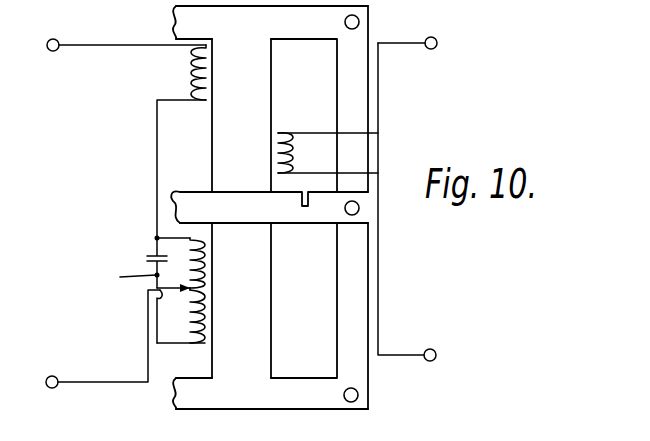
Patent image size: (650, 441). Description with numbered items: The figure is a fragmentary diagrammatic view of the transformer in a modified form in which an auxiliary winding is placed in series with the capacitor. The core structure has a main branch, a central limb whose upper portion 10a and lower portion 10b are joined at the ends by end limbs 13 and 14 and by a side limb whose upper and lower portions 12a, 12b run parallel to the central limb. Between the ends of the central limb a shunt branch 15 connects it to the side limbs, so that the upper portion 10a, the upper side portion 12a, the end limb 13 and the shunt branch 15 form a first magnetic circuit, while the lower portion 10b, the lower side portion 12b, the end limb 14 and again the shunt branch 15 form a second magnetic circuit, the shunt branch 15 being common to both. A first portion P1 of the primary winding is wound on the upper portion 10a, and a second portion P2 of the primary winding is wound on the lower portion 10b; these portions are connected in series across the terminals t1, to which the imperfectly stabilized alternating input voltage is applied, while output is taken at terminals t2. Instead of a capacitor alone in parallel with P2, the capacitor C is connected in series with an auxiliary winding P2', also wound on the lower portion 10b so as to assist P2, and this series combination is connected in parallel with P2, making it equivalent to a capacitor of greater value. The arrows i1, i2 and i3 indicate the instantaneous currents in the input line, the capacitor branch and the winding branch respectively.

The end limb 13 is at (270, 22).
The upper portion of central limb 10a is at (238, 120).
The upper portion of side limb 12a is at (356, 115).
The shunt branch 15 is at (269, 207).
The lower portion of central limb 10b is at (247, 368).
The lower portion of side limb 12b is at (357, 315).
The end limb 14 is at (270, 393).
The first portion of primary winding P1 is at (192, 70).
The second portion of primary winding P2 is at (198, 265).
The auxiliary winding P2' is at (203, 315).
The capacitor C is at (146, 263).
The terminals t1 is at (121, 200).
The output terminals t2 is at (369, 203).
The current i1 is at (128, 41).
The current i2 is at (172, 234).
The current i3 is at (184, 339).